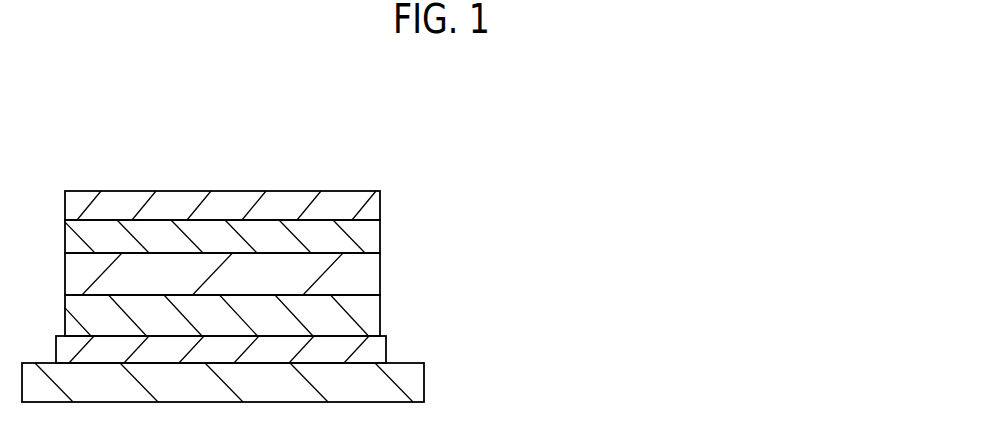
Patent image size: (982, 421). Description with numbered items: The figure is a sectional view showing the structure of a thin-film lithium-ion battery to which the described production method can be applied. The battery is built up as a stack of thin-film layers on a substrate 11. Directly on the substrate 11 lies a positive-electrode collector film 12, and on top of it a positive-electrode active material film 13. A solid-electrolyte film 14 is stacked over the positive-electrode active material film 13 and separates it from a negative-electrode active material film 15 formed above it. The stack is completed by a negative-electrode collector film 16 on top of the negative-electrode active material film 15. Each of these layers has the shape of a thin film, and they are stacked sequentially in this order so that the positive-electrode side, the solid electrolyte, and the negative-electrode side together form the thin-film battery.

The substrate 11 is at (425, 383).
The positive-electrode collector film 12 is at (387, 348).
The positive-electrode active material film 13 is at (381, 314).
The solid-electrolyte film 14 is at (381, 271).
The negative-electrode active material film 15 is at (381, 236).
The negative-electrode collector film 16 is at (381, 203).